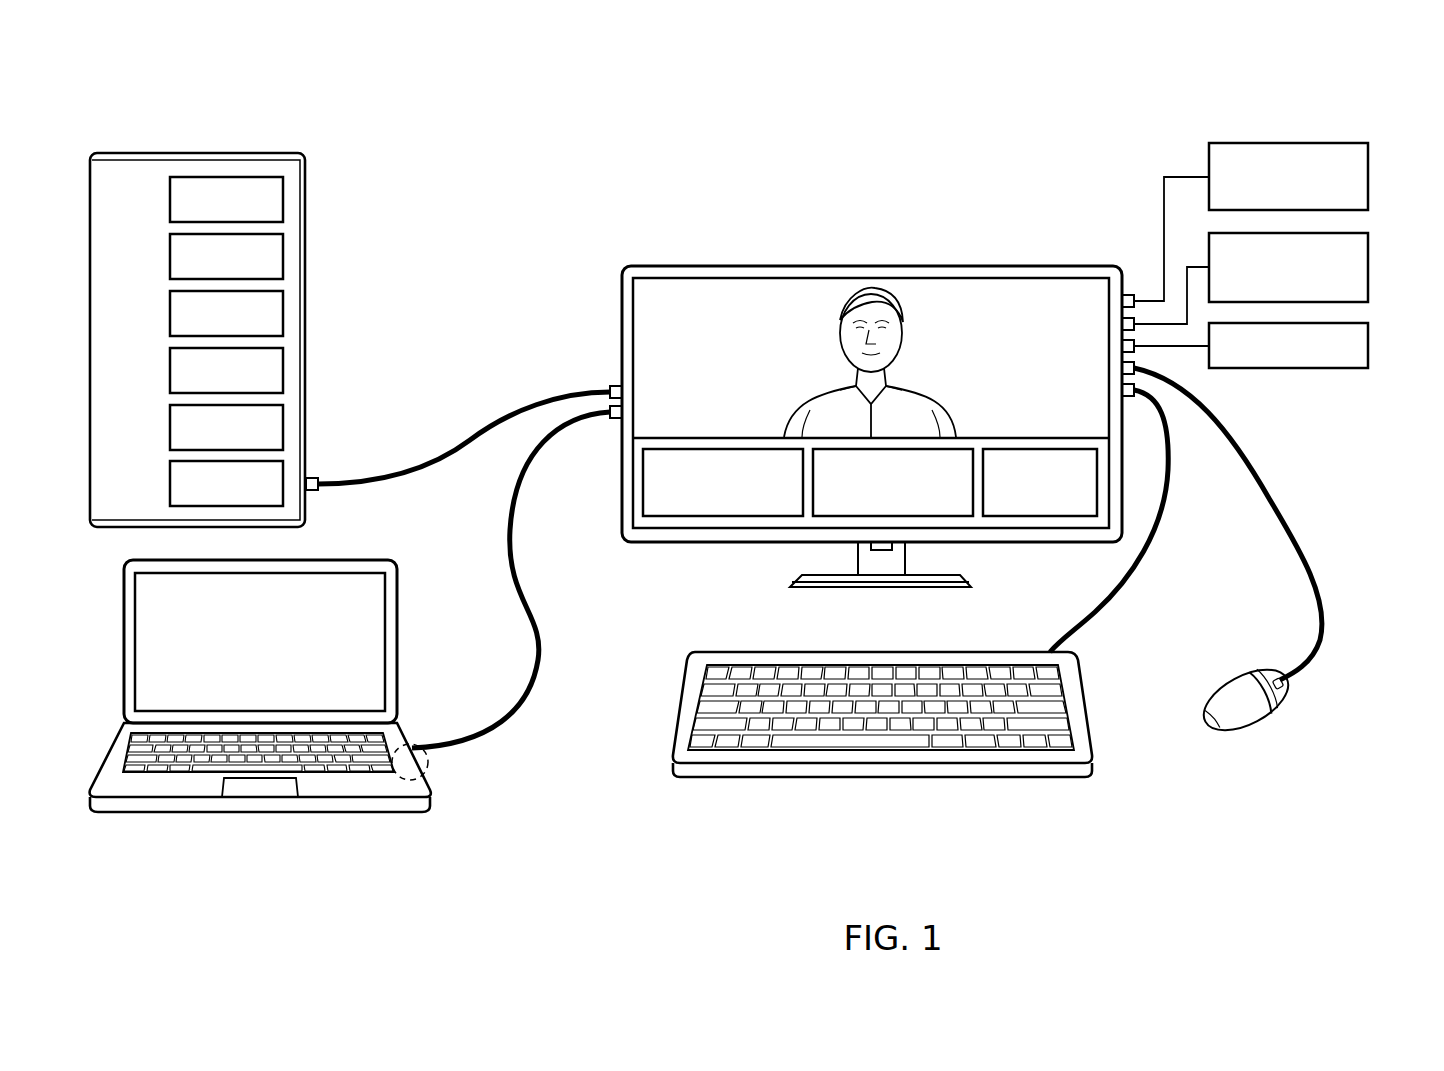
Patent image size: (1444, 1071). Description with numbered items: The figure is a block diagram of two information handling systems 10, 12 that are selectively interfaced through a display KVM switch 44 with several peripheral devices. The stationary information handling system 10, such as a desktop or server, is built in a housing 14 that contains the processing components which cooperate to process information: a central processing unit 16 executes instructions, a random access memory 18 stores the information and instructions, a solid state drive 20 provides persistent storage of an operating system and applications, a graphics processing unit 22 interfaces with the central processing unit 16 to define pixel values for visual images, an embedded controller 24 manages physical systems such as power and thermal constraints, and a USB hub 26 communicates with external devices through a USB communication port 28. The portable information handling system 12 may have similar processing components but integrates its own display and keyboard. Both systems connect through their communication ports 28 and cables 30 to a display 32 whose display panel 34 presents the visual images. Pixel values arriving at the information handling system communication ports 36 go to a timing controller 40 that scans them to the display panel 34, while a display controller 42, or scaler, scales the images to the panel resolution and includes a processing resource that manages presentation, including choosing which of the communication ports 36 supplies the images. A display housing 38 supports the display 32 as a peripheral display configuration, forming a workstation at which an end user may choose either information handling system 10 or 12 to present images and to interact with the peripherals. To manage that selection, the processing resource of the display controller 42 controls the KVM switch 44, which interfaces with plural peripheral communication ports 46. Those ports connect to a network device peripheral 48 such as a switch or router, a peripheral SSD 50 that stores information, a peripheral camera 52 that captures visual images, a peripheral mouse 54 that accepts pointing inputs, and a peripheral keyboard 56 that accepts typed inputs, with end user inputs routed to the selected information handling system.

The information handling system 10 is at (178, 148).
The portable information handling system 12 is at (264, 813).
The housing 14 is at (305, 272).
The central processing unit 16 is at (170, 206).
The random access memory 18 is at (170, 263).
The solid state drive 20 is at (170, 320).
The graphics processing unit 22 is at (170, 377).
The embedded controller 24 is at (170, 434).
The USB hub 26 is at (170, 490).
The communication port 28 is at (470, 800).
The cable 30 is at (420, 468).
The display 32 is at (755, 260).
The display panel 34 is at (738, 363).
The information handling system communication ports 36 is at (602, 376).
The display housing 38 is at (722, 544).
The timing controller 40 is at (700, 449).
The display controller 42 is at (927, 449).
The KVM switch 44 is at (1041, 449).
The peripheral communication ports 46 is at (1128, 280).
The network device peripheral 48 is at (1368, 167).
The peripheral SSD 50 is at (1368, 258).
The peripheral camera 52 is at (1368, 338).
The peripheral mouse 54 is at (1262, 724).
The peripheral keyboard 56 is at (882, 778).